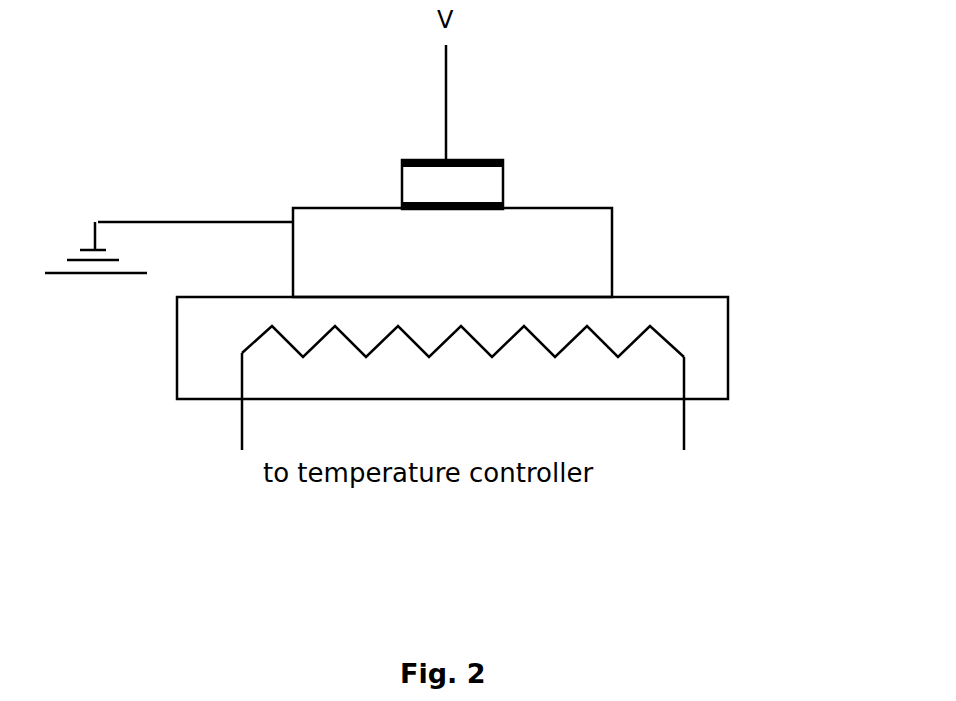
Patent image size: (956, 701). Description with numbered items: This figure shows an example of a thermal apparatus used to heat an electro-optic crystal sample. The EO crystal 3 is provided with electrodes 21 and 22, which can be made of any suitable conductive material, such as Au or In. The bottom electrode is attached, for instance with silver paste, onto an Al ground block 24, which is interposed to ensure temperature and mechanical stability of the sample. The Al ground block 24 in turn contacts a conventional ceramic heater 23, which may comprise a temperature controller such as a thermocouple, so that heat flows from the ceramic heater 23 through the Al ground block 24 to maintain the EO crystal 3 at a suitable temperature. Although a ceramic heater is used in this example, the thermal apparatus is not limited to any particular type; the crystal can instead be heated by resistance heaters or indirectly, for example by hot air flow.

The EO crystal 3 is at (503, 180).
The electrode 21 is at (441, 142).
The electrode 22 is at (503, 207).
The ceramic heater 23 is at (728, 337).
The Al ground block 24 is at (612, 256).